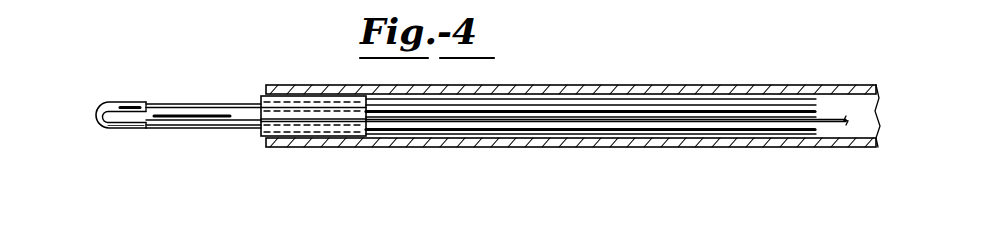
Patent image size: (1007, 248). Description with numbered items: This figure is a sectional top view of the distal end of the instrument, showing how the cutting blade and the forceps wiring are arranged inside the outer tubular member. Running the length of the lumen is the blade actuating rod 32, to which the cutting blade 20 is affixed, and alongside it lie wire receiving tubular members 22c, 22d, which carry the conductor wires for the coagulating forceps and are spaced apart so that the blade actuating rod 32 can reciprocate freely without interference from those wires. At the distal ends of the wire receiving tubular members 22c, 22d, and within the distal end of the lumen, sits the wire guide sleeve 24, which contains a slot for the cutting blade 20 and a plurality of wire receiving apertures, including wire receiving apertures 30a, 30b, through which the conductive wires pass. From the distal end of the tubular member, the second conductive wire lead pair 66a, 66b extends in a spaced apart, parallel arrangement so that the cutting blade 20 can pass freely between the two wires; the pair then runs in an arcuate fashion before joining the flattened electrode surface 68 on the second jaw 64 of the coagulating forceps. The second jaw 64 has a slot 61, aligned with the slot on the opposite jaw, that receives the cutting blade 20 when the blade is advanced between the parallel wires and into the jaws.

The cutting blade 20 is at (170, 107).
The slot 61 is at (112, 107).
The second jaw 64 is at (101, 121).
The flattened electrode surface 68 is at (123, 117).
The second conductive wire lead 66a is at (203, 98).
The second conductive wire lead 66b is at (213, 121).
The wire guide sleeve 24 is at (251, 130).
The wire receiving aperture 30a is at (303, 80).
The wire receiving aperture 30b is at (327, 130).
The blade actuating rod 32 is at (601, 113).
The wire receiving tubular member 22c is at (802, 100).
The wire receiving tubular member 22d is at (798, 127).